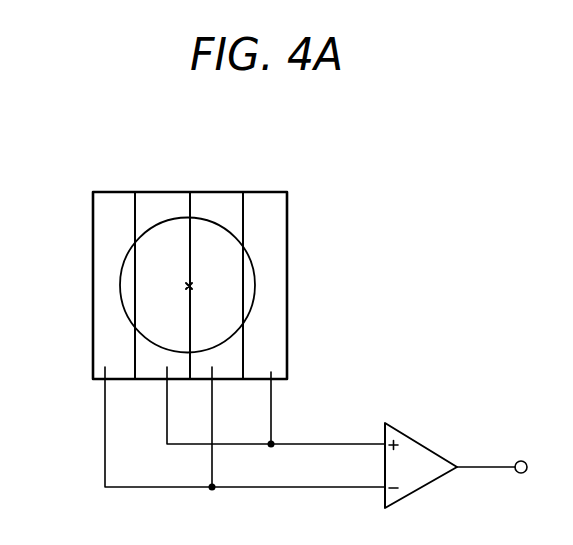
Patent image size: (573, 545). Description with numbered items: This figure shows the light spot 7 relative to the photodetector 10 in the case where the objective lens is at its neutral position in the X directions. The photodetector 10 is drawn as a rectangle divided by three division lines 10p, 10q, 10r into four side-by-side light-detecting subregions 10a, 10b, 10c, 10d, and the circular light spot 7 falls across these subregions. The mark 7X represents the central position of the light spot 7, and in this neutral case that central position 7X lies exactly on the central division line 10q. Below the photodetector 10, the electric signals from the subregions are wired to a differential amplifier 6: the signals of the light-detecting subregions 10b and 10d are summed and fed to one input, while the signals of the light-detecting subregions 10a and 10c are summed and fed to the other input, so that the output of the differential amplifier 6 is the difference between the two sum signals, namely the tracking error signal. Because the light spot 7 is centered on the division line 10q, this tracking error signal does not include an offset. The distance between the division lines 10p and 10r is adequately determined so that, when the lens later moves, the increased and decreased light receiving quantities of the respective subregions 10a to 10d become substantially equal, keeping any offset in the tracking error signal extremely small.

The photodetector 10 is at (93, 191).
The light-detecting subregion 10a is at (116, 206).
The light-detecting subregion 10b is at (167, 206).
The light-detecting subregion 10c is at (221, 204).
The light-detecting subregion 10d is at (269, 205).
The division line 10p is at (135, 228).
The division line 10q is at (186, 352).
The division line 10r is at (243, 361).
The light spot 7 is at (230, 310).
The central position of the light spot 7X is at (195, 286).
The differential amplifier 6 is at (415, 437).